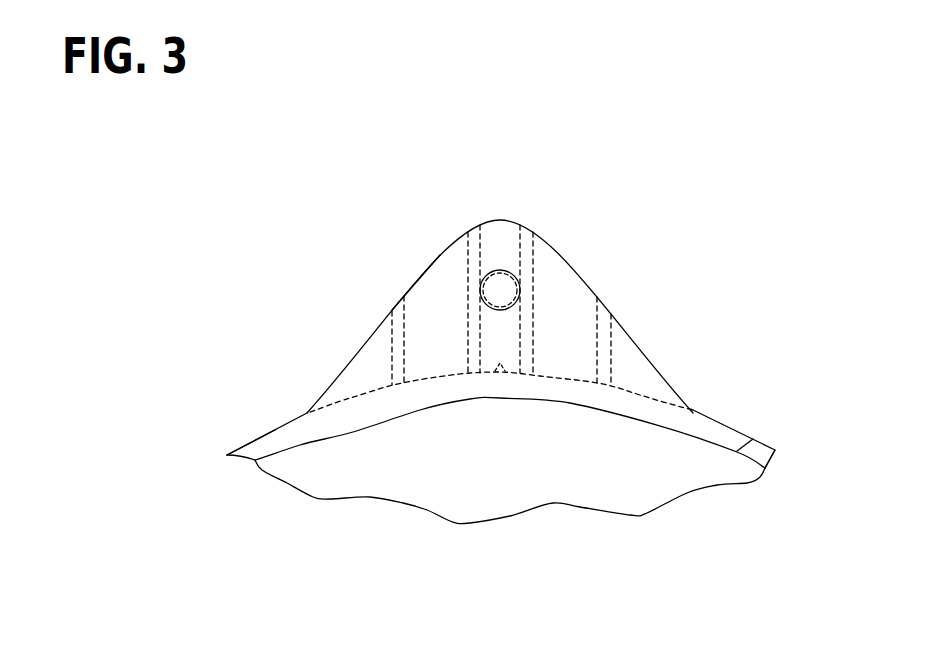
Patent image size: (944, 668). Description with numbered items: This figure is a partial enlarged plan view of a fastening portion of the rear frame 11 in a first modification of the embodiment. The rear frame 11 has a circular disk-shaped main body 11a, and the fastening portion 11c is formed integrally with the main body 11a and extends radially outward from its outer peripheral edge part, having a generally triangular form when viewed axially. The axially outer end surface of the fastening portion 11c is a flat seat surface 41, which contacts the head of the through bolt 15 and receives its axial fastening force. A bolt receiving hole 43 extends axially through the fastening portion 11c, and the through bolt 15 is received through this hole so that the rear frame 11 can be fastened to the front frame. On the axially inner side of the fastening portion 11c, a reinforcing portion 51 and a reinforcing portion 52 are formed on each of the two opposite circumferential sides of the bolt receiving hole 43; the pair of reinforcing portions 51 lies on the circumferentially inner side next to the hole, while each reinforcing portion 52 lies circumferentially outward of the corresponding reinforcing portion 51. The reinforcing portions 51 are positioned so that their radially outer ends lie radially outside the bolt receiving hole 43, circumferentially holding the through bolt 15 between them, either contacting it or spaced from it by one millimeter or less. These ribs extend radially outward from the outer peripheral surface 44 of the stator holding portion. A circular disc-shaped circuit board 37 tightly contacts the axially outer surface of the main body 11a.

The rear frame 11 is at (704, 420).
The main body 11a is at (278, 437).
The fastening portion 11c is at (423, 274).
The through bolt 15 is at (508, 272).
The circuit board 37 is at (754, 439).
The seat surface 41 is at (574, 283).
The bolt receiving hole 43 is at (497, 283).
The outer peripheral surface 44 is at (502, 376).
The reinforcing portion 51 is at (466, 250).
The reinforcing portion 52 is at (388, 352).